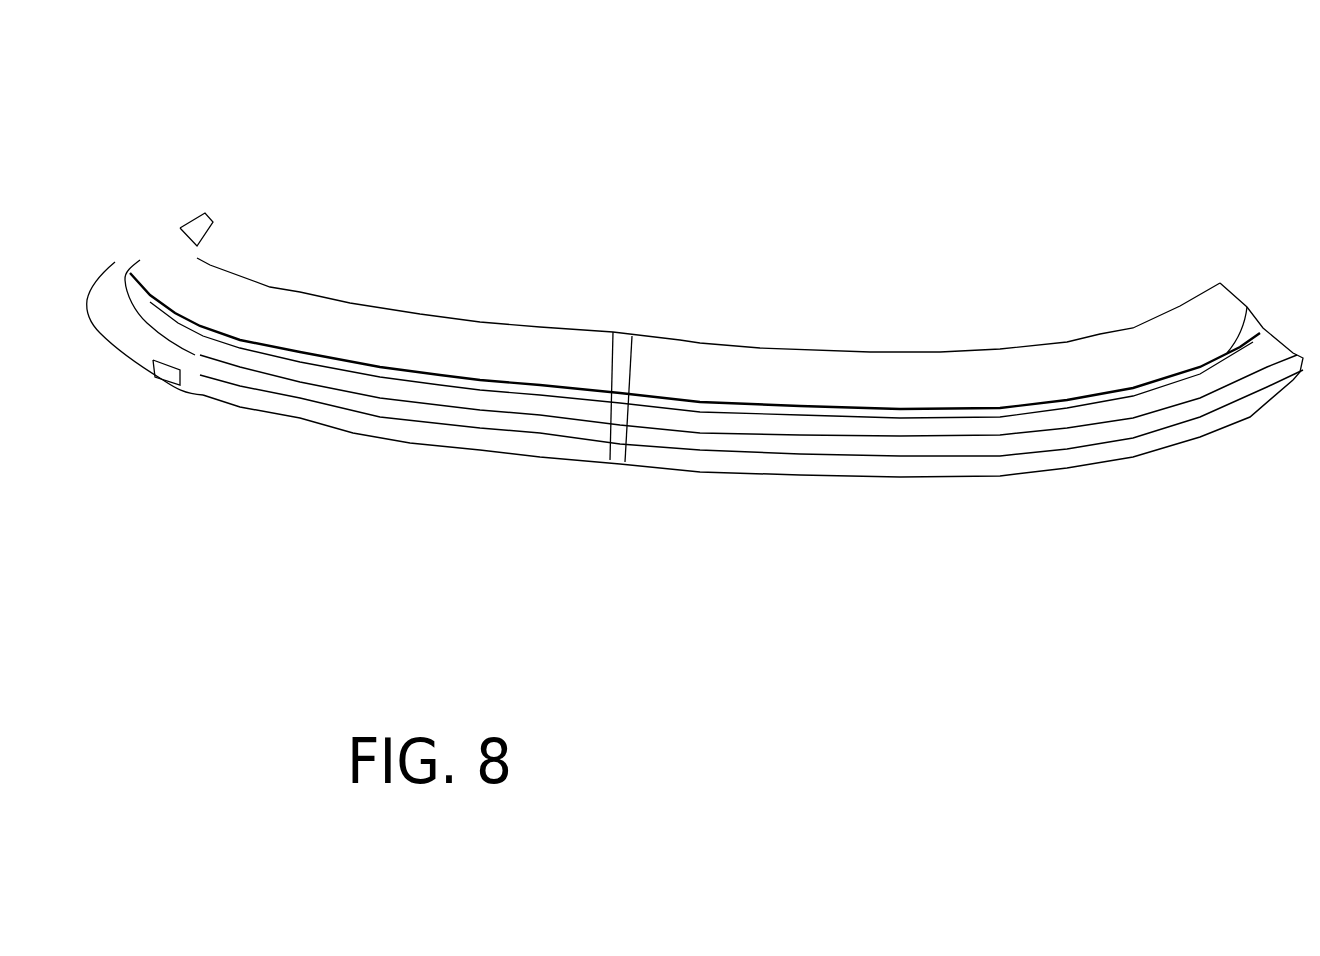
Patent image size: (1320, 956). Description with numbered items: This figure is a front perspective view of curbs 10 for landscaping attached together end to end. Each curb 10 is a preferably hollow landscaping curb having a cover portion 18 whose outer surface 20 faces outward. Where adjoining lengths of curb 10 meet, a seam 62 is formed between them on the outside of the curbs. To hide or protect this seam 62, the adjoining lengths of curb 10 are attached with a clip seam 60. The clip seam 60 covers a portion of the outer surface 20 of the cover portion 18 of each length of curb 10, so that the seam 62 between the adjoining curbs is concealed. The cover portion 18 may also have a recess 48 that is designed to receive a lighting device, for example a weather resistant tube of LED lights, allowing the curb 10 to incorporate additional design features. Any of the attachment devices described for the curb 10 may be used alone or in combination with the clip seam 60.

The curb 10 is at (207, 282).
The cover portion 18 is at (482, 347).
The outer surface 20 is at (475, 400).
The recess 48 is at (1250, 306).
The clip seam 60 is at (617, 443).
The seam 62 is at (197, 347).